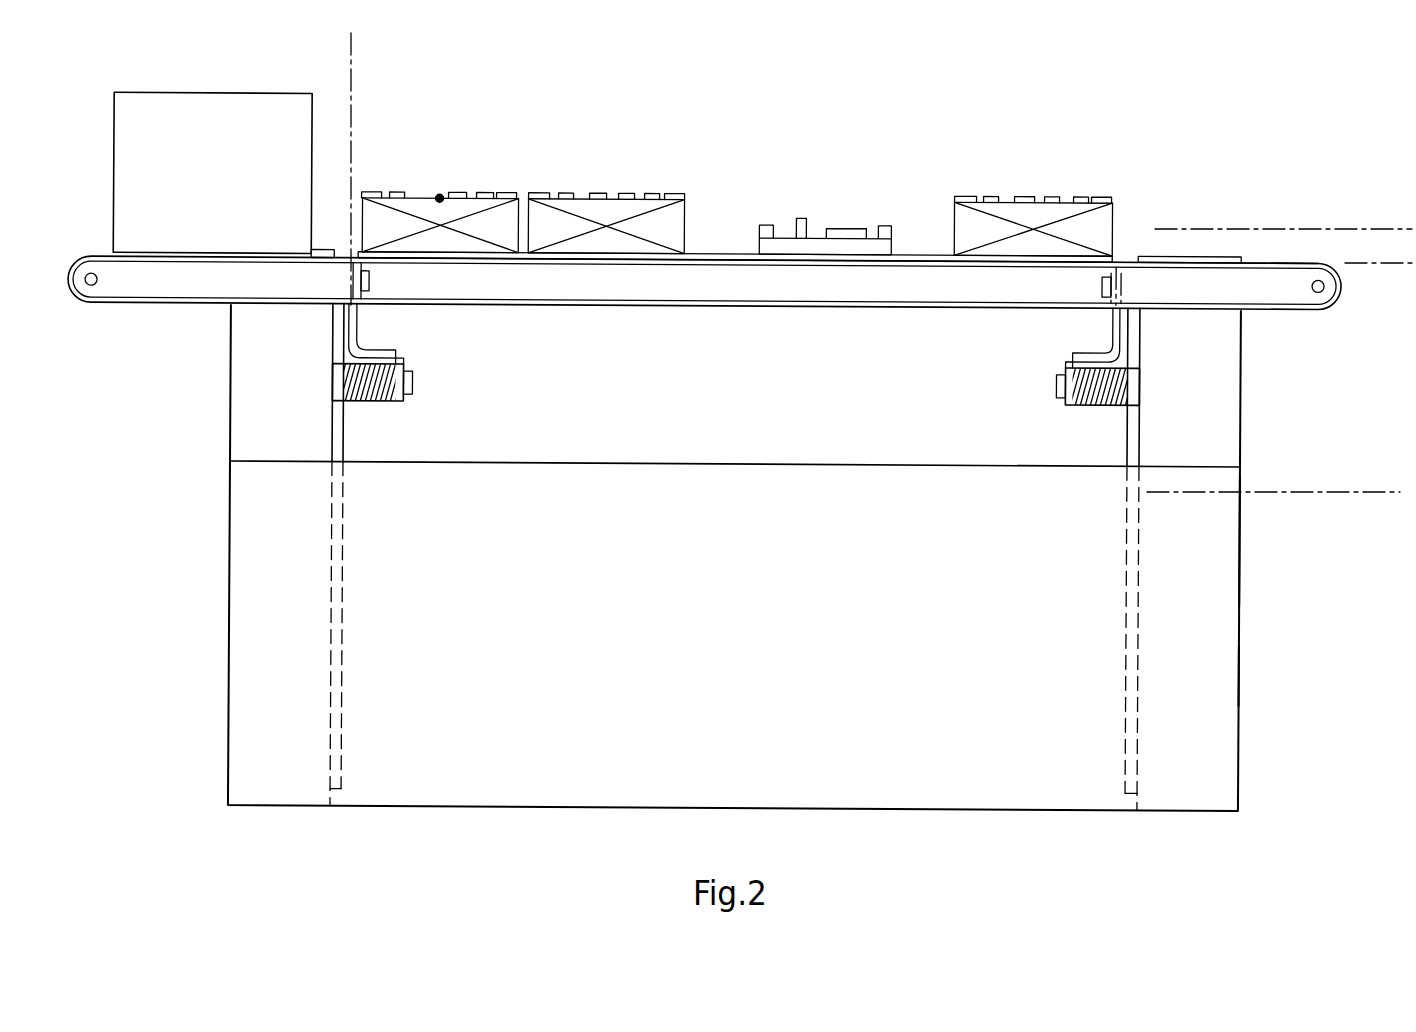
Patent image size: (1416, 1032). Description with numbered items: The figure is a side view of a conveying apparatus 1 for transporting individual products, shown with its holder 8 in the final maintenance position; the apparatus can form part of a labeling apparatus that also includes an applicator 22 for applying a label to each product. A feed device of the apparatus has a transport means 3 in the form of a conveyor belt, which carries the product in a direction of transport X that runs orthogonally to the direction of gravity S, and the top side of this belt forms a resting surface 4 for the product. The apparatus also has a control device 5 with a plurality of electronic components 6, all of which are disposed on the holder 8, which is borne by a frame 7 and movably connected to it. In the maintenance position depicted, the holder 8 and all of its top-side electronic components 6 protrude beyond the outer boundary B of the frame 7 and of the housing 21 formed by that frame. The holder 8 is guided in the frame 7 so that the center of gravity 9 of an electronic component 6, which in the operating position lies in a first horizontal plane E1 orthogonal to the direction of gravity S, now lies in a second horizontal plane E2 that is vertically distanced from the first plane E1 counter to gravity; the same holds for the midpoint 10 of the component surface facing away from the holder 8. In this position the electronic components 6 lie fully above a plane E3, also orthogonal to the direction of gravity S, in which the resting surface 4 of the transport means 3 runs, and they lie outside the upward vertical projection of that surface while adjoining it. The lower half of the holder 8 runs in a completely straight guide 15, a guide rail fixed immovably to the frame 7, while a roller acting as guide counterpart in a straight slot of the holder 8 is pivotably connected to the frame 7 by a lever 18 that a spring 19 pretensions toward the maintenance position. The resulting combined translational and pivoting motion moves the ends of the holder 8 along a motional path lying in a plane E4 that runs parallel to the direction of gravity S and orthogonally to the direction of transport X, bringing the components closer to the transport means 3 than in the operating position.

The conveying apparatus 1 is at (1358, 102).
The transport means 3 is at (1246, 282).
The resting surface 4 is at (1290, 263).
The control device 5 is at (398, 102).
The electronic component 6 is at (497, 220).
The frame 7 is at (1240, 598).
The holder 8 is at (1113, 258).
The center of gravity of the electronic component 9 is at (605, 208).
The midpoint of the component surface facing away from the holder 10 is at (438, 194).
The guide 15 is at (335, 612).
The lever 18 is at (353, 322).
The spring 19 is at (378, 385).
The housing 21 is at (1240, 528).
The applicator 22 is at (223, 198).
The outer boundary of the frame B is at (1240, 672).
The first plane E1 is at (1380, 494).
The second plane E2 is at (1380, 233).
The third plane E3 is at (1380, 265).
The fourth plane E4 is at (349, 72).
The direction of transport X is at (990, 121).
The direction of gravity S is at (1320, 347).